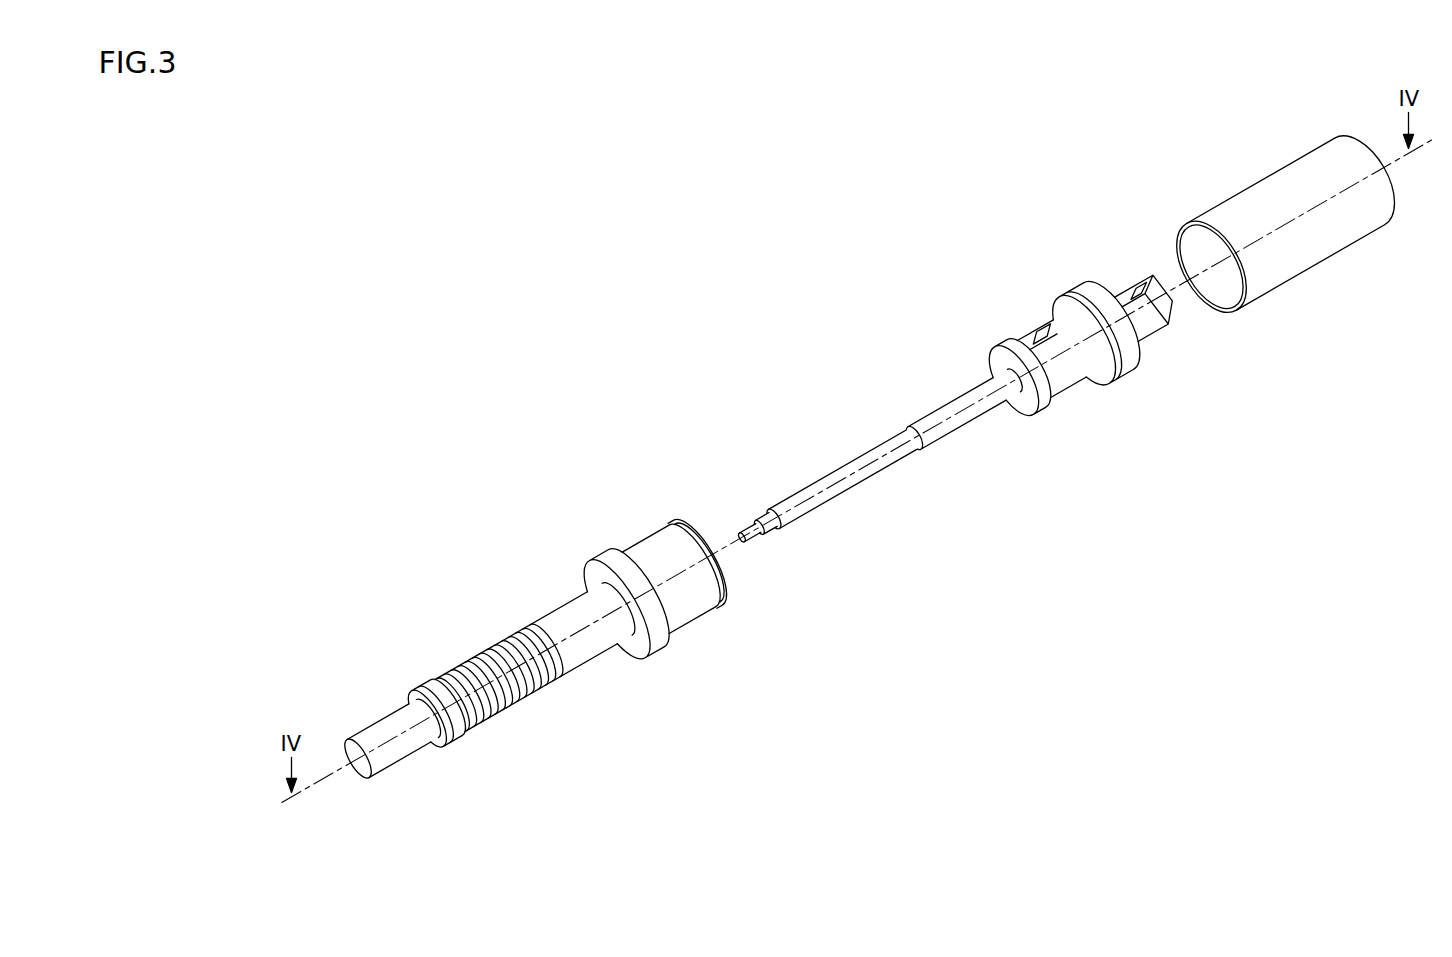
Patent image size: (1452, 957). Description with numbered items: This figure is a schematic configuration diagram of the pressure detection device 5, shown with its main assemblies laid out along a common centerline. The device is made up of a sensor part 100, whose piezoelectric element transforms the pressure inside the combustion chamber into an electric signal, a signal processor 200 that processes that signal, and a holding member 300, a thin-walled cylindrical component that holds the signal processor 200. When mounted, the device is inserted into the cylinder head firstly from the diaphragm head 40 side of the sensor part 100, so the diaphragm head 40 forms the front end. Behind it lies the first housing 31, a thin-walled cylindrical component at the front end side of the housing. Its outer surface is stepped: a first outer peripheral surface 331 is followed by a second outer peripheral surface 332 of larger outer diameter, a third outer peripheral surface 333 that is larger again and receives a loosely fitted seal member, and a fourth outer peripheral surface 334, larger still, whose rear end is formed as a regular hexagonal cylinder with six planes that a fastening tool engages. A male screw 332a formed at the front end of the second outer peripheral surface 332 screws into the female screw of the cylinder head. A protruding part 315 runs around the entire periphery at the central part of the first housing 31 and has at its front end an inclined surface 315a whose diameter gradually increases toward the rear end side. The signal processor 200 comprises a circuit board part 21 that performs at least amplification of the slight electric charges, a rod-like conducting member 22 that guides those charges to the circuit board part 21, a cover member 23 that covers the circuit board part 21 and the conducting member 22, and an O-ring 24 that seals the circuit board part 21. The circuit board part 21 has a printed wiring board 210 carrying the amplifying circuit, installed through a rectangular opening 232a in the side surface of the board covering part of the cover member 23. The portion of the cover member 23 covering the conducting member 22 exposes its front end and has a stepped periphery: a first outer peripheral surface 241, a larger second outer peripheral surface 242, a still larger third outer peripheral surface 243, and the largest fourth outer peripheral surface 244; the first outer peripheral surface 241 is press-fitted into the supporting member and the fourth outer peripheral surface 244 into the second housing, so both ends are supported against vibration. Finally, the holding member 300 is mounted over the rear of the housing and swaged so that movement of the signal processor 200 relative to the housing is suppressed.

The pressure detection device 5 is at (603, 333).
The sensor part 100 is at (498, 551).
The signal processor 200 is at (900, 295).
The holding member 300 is at (1268, 178).
The circuit board part 21 is at (1020, 326).
The conducting member 22 is at (748, 529).
The cover member 23 is at (924, 410).
The O-ring 24 is at (1080, 292).
The first housing 31 is at (392, 780).
The diaphragm head 40 is at (348, 782).
The printed wiring board 210 is at (1078, 374).
The rectangular opening 232a is at (1050, 330).
The first outer peripheral surface 241 is at (773, 532).
The second outer peripheral surface 242 is at (848, 494).
The third outer peripheral surface 243 is at (958, 432).
The fourth outer peripheral surface 244 is at (1034, 416).
The protruding part 315 is at (440, 679).
The inclined surface 315a is at (412, 689).
The first outer peripheral surface 331 is at (455, 742).
The second outer peripheral surface 332 is at (576, 678).
The male screw 332a is at (510, 720).
The third outer peripheral surface 333 is at (636, 660).
The fourth outer peripheral surface 334 is at (675, 642).